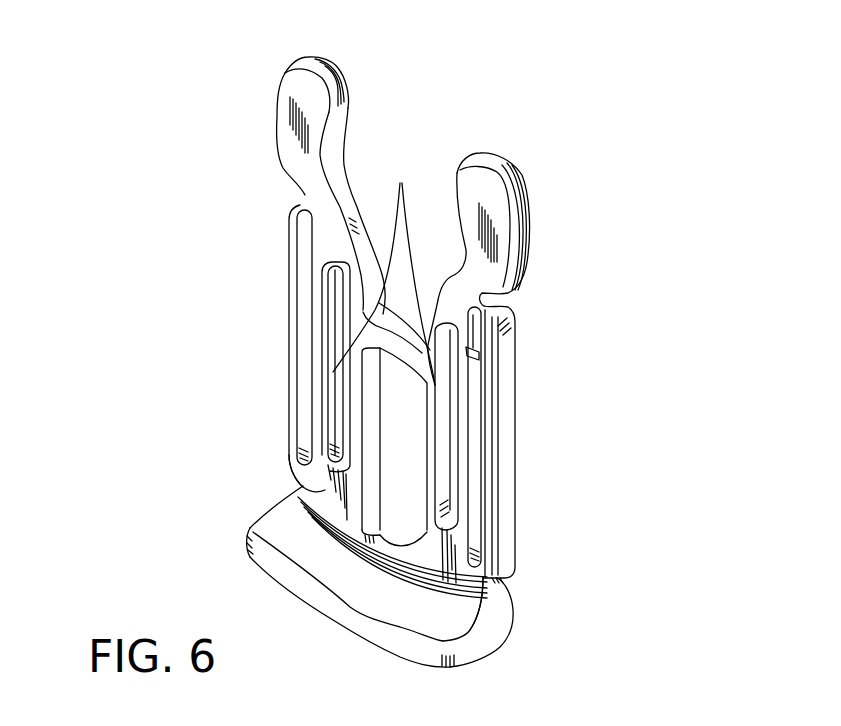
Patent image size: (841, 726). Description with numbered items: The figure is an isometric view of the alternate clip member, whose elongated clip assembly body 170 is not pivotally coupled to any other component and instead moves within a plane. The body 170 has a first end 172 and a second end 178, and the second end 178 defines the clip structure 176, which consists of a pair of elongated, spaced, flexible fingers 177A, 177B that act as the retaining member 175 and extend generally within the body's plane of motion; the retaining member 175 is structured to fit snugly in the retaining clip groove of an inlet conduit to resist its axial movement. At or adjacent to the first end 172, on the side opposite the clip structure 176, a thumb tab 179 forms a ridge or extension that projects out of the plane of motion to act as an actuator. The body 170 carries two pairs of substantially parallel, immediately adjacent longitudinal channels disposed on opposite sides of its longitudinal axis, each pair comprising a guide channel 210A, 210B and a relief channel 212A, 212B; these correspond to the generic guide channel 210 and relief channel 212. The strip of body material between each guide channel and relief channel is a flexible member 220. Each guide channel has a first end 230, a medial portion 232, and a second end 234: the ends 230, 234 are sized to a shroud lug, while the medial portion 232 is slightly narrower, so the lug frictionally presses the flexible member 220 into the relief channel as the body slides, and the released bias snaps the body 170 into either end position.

The clip assembly body 170 is at (300, 450).
The first end 172 is at (287, 592).
The retaining member 175 is at (337, 78).
The clip structure 176 is at (568, 238).
The first finger 177A is at (350, 102).
The second finger 177B is at (508, 185).
The second end 178 is at (277, 102).
The thumb tab 179 is at (483, 645).
The guide channel 210 is at (228, 205).
The first guide channel 210A is at (298, 347).
The second guide channel 210B is at (497, 463).
The relief channel 212 is at (240, 402).
The first relief channel 212A is at (350, 317).
The second relief channel 212B is at (450, 428).
The flexible member 220 is at (303, 483).
The guide channel first end 230 is at (305, 478).
The guide channel medial portion 232 is at (384, 267).
The guide channel second end 234 is at (447, 343).